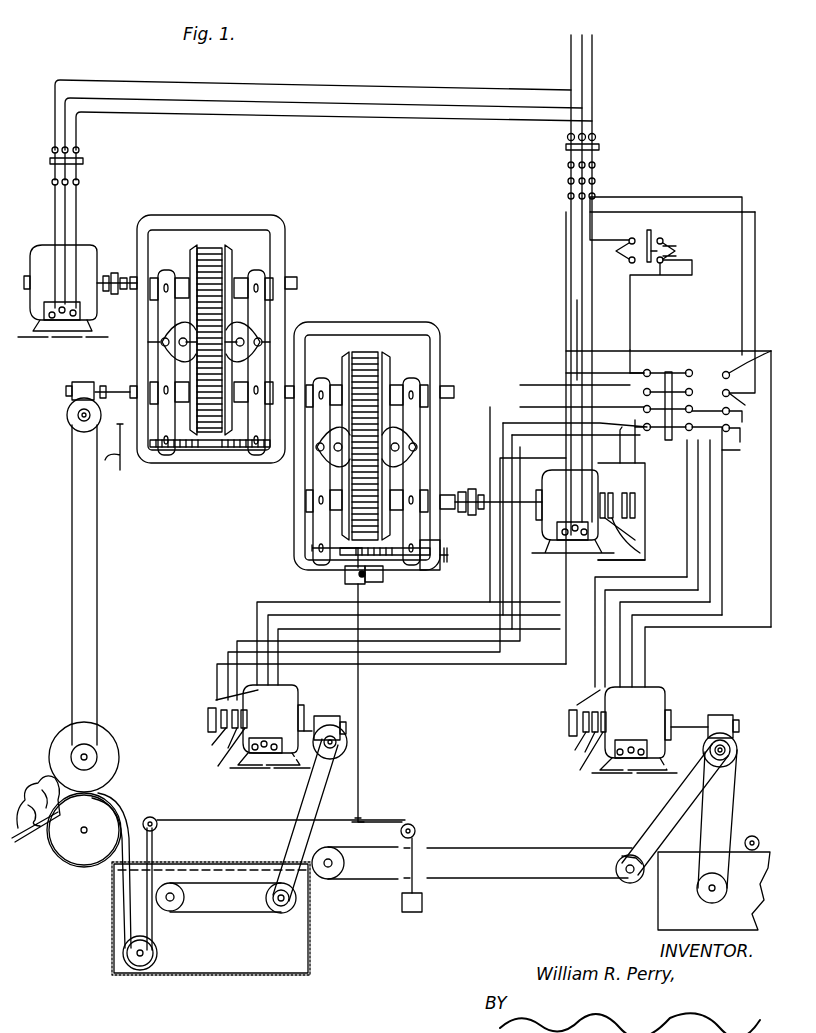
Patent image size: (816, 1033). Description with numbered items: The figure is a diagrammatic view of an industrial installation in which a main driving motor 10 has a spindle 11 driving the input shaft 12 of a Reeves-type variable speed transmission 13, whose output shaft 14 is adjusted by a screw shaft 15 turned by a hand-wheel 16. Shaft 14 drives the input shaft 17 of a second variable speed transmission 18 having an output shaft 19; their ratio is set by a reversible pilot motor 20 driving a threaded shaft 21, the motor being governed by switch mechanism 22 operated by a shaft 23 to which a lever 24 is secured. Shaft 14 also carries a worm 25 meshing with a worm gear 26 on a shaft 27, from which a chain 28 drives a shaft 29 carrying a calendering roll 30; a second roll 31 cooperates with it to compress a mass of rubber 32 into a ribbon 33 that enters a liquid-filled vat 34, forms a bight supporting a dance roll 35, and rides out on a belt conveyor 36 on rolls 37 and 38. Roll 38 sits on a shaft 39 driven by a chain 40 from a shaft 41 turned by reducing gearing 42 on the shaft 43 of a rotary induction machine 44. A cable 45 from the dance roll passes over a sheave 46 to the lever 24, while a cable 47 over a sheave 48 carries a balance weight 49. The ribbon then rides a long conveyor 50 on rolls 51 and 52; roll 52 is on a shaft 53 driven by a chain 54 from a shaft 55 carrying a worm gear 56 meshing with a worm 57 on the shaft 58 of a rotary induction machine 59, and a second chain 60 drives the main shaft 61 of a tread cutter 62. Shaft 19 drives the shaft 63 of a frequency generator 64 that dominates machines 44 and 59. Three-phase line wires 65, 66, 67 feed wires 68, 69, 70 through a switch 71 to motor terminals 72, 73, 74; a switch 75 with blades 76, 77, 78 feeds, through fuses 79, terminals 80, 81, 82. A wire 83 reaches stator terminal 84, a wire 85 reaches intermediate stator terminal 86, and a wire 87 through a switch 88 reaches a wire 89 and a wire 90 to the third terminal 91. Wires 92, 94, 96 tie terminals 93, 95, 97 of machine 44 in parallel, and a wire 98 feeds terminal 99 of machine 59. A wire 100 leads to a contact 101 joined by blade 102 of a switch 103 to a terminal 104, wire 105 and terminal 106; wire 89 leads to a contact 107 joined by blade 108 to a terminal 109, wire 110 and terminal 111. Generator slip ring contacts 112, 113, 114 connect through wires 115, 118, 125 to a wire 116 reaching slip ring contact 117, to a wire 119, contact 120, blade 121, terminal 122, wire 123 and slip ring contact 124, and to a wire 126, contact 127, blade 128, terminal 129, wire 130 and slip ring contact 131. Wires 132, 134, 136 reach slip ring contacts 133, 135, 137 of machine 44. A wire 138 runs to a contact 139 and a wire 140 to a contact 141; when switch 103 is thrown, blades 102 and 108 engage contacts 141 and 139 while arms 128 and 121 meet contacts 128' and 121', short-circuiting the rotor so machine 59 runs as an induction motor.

The main driving motor 10 is at (84, 247).
The spindle 11 is at (99, 278).
The input shaft 12 is at (122, 270).
The variable speed transmission 13 is at (280, 232).
The output shaft 14 is at (108, 377).
The screw shaft 15 is at (210, 444).
The hand-wheel 16 is at (120, 468).
The input shaft 17 is at (332, 385).
The second variable speed transmission 18 is at (447, 327).
The output shaft 19 is at (467, 492).
The reversible pilot motor 20 is at (428, 570).
The threaded shaft 21 is at (305, 558).
The switch mechanism 22 is at (392, 575).
The shaft 23 is at (344, 577).
The lever 24 is at (360, 692).
The worm 25 is at (70, 380).
The worm gear 26 is at (68, 407).
The shaft 27 is at (78, 414).
The chain 28 is at (72, 484).
The shaft 29 is at (88, 756).
The calendering roll 30 is at (100, 724).
The second roll 31 is at (66, 862).
The mass of rubber 32 is at (33, 782).
The ribbon 33 is at (110, 795).
The vat 34 is at (185, 978).
The dance roll 35 is at (154, 953).
The belt conveyor 36 is at (233, 913).
The roll 37 is at (184, 897).
The roll 38 is at (266, 898).
The shaft 39 is at (281, 906).
The chain 40 is at (290, 848).
The shaft 41 is at (333, 745).
The reducing gearing 42 is at (340, 716).
The shaft 43 is at (310, 722).
The rotary induction machine 44 is at (299, 690).
The cable 45 is at (147, 850).
The sheave 46 is at (154, 818).
The cable 47 is at (393, 820).
The sheave 48 is at (416, 829).
The balance weight 49 is at (412, 912).
The long conveyor 50 is at (494, 882).
The roll 51 is at (344, 863).
The roll 52 is at (616, 868).
The shaft 53 is at (628, 856).
The chain 54 is at (656, 822).
The shaft 55 is at (730, 750).
The worm gear 56 is at (738, 742).
The worm 57 is at (724, 714).
The shaft 58 is at (686, 722).
The rotary induction machine 59 is at (668, 698).
The second chain 60 is at (728, 805).
The main shaft 61 is at (700, 895).
The tread cutter 62 is at (672, 895).
The shaft 63 is at (563, 536).
The frequency generator 64 is at (600, 533).
The line wire 65 is at (568, 67).
The line wire 66 is at (579, 42).
The line wire 67 is at (596, 40).
The wire 68 is at (474, 120).
The wire 69 is at (456, 112).
The wire 70 is at (478, 95).
The switch 71 is at (84, 162).
The terminal 72 is at (73, 316).
The terminal 73 is at (62, 313).
The terminal 74 is at (52, 318).
The switch 75 is at (599, 147).
The blade 76 is at (566, 135).
The blade 77 is at (585, 133).
The blade 78 is at (596, 137).
The fuses 79 is at (568, 181).
The terminal 80 is at (568, 196).
The terminal 81 is at (578, 199).
The terminal 82 is at (596, 184).
The wire 83 is at (566, 239).
The stator terminal 84 is at (565, 555).
The wire 85 is at (572, 262).
The intermediate stator terminal 86 is at (575, 531).
The wire 87 is at (590, 237).
The switch 88 is at (657, 235).
The wire 89 is at (630, 324).
The wire 90 is at (607, 395).
The third terminal 91 is at (583, 536).
The wire 92 is at (496, 545).
The terminal 93 is at (274, 750).
The wire 94 is at (490, 425).
The terminal 95 is at (264, 747).
The wire 96 is at (492, 449).
The terminal 97 is at (255, 750).
The wire 98 is at (604, 350).
The terminal 99 is at (641, 755).
The wire 100 is at (593, 374).
The contact 101 is at (645, 371).
The blade 102 is at (652, 388).
The switch 103 is at (700, 440).
The terminal 104 is at (692, 389).
The wire 105 is at (712, 510).
The terminal 106 is at (631, 753).
The contact 107 is at (562, 388).
The blade 108 is at (670, 364).
The terminal 109 is at (692, 410).
The wire 110 is at (700, 490).
The terminal 111 is at (620, 755).
The slip ring contact 112 is at (633, 510).
The slip ring contact 113 is at (635, 540).
The slip ring contact 114 is at (640, 553).
The wire 115 is at (605, 485).
The wire 116 is at (645, 565).
The slip ring contact 117 is at (572, 723).
The wire 118 is at (611, 492).
The wire 119 is at (623, 437).
The contact 120 is at (650, 432).
The blade 121 is at (750, 437).
The contact 121' is at (789, 489).
The terminal 122 is at (740, 455).
The wire 123 is at (688, 530).
The slip ring contact 124 is at (575, 750).
The wire 125 is at (625, 500).
The wire 126 is at (566, 404).
The contact 127 is at (641, 425).
The blade 128 is at (671, 372).
The contact 128' is at (750, 421).
The terminal 129 is at (742, 422).
The wire 130 is at (700, 577).
The slip ring contact 131 is at (580, 770).
The wire 132 is at (508, 665).
The slip ring contact 133 is at (208, 712).
The wire 134 is at (536, 605).
The slip ring contact 135 is at (212, 745).
The wire 136 is at (536, 630).
The slip ring contact 137 is at (218, 766).
The wire 138 is at (748, 245).
The contact 139 is at (749, 405).
The wire 140 is at (724, 204).
The contact 141 is at (775, 348).